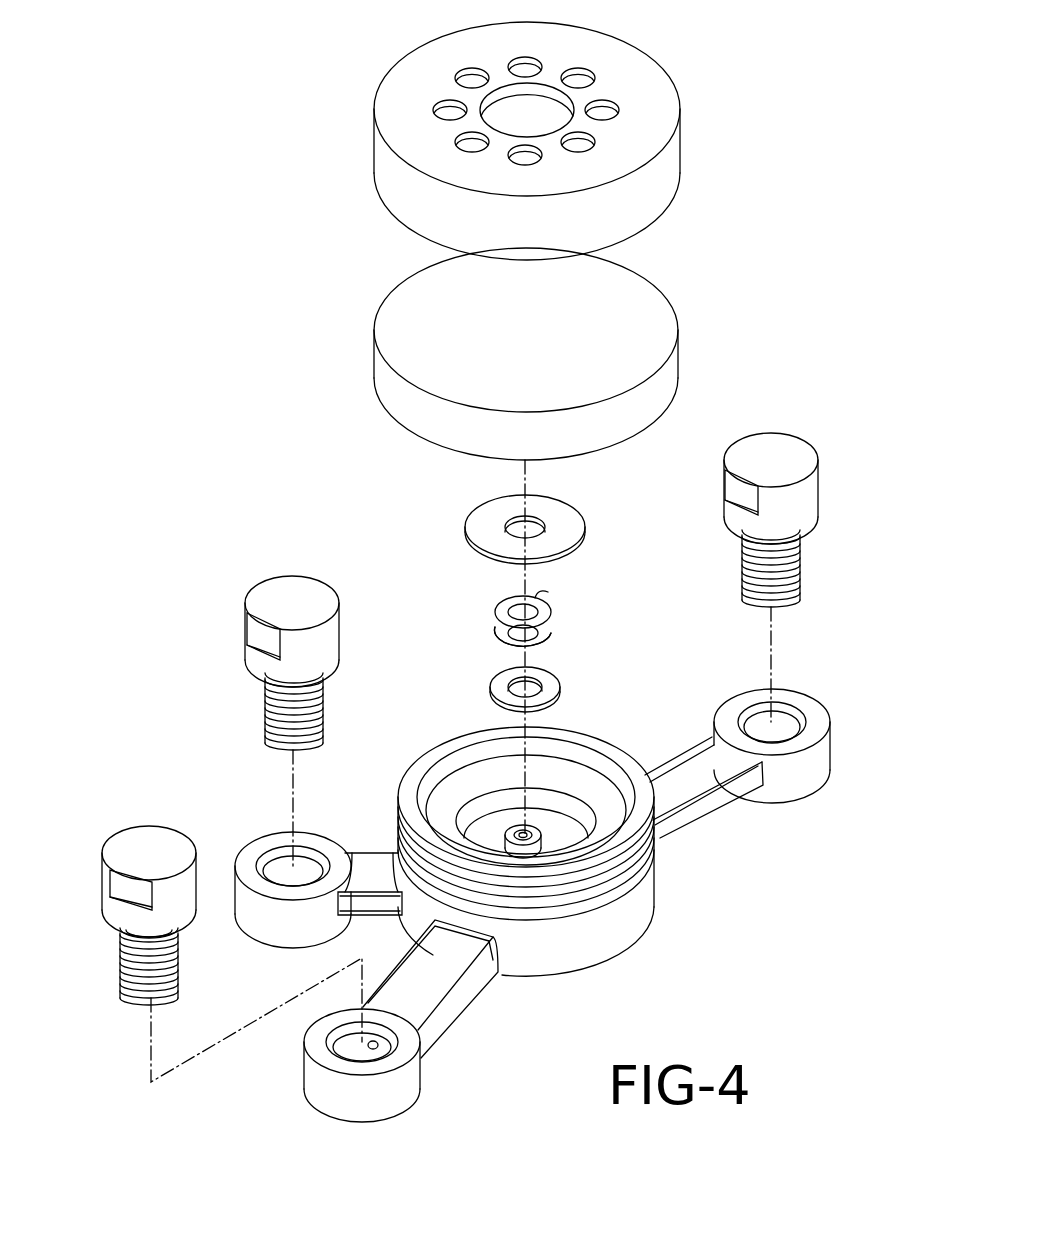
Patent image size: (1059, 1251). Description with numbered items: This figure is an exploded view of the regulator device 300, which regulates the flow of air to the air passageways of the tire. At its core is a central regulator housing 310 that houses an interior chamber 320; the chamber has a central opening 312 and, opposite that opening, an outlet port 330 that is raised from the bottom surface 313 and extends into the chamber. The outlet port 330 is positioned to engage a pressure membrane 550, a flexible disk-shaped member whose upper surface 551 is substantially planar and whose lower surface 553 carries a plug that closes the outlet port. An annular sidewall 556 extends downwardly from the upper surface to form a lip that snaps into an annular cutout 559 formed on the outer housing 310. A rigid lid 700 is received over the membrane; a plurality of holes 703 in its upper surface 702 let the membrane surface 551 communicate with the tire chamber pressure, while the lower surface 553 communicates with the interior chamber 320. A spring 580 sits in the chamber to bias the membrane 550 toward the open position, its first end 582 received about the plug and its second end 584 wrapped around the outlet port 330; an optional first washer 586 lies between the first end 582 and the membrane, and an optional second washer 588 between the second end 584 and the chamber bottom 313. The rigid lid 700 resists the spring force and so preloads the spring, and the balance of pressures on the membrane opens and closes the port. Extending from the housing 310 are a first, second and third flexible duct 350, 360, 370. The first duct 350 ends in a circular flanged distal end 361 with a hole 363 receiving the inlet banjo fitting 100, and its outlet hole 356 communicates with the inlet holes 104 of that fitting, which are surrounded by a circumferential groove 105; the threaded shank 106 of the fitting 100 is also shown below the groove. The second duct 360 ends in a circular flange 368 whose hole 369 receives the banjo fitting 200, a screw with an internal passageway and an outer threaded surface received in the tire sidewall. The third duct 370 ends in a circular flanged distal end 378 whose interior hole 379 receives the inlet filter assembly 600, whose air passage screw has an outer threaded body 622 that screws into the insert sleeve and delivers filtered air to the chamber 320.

The rigid lid 700 is at (400, 42).
The upper surface 702 is at (625, 70).
The holes 703 is at (445, 100).
The regulator device 300 is at (348, 297).
The pressure membrane 550 is at (625, 305).
The upper surface 551 is at (526, 330).
The lower surface 553 is at (437, 443).
The annular sidewall 556 is at (638, 405).
The first washer 586 is at (565, 525).
The spring 580 is at (500, 612).
The first end 582 is at (540, 590).
The second end 584 is at (538, 632).
The second washer 588 is at (500, 675).
The central regulator housing 310 is at (552, 948).
The central opening 312 is at (440, 775).
The bottom surface 313 is at (562, 847).
The interior chamber 320 is at (560, 800).
The outlet port 330 is at (523, 834).
The annular cutout 559 is at (565, 892).
The first flexible duct 350 is at (440, 980).
The second flexible duct 360 is at (690, 782).
The third flexible duct 370 is at (375, 855).
The circular flanged distal end 361 is at (305, 1072).
The hole 363 is at (345, 1050).
The outlet hole 356 is at (373, 1050).
The circular flange 368 is at (805, 775).
The hole 369 is at (785, 700).
The circular flanged distal end 378 is at (273, 858).
The interior hole 379 is at (292, 858).
The banjo fitting 200 is at (822, 420).
The inlet filter assembly 600 is at (215, 572).
The outer threaded body 622 is at (270, 705).
The inlet banjo fitting 100 is at (122, 820).
The inlet holes 104 is at (128, 938).
The circumferential groove 105 is at (170, 935).
The screw thread 106 is at (133, 978).